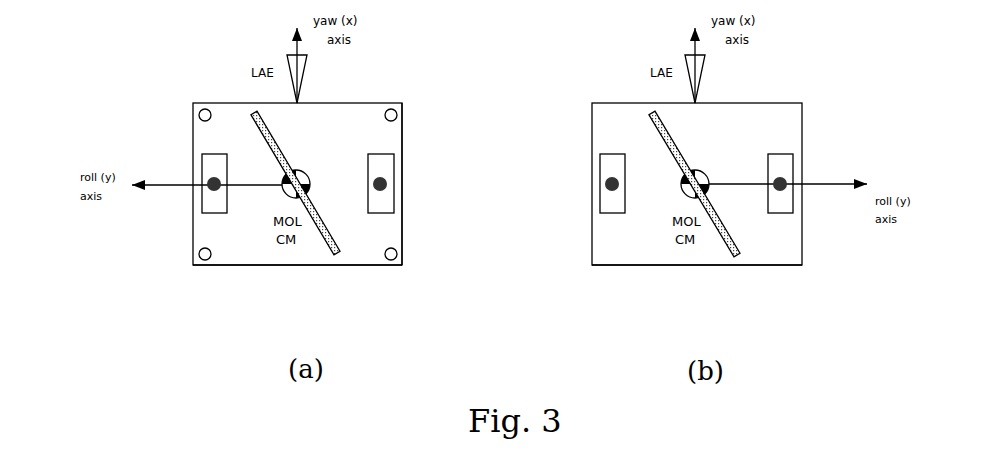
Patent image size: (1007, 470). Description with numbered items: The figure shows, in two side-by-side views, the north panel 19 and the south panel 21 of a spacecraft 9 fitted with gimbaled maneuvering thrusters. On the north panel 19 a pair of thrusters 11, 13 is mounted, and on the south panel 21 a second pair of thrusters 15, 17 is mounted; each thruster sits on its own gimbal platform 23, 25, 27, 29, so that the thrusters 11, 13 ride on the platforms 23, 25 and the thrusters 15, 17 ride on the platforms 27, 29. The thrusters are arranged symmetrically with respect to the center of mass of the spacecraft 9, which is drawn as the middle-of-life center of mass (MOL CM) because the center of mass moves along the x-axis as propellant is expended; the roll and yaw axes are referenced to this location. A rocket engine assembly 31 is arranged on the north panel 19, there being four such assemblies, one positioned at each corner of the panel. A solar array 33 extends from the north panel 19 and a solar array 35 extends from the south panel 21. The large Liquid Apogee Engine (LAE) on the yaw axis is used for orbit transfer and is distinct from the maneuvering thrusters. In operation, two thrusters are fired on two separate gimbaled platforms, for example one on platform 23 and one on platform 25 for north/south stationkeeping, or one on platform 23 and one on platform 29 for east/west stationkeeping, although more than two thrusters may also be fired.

In FIG. 3a, the spacecraft 9 is at (205, 297).
In FIG. 3b, the spacecraft 9 is at (805, 302).
In FIG. 3a, the thruster 11 is at (211, 182).
In FIG. 3a, the thruster 13 is at (383, 182).
In FIG. 3b, the thruster 15 is at (608, 185).
In FIG. 3b, the thruster 17 is at (783, 181).
In FIG. 3a, the north panel 19 is at (297, 204).
In FIG. 3b, the south panel 21 is at (697, 200).
In FIG. 3a, the gimbal platform 23 is at (185, 210).
In FIG. 3a, the gimbal platform 25 is at (410, 215).
In FIG. 3b, the gimbal platform 27 is at (585, 213).
In FIG. 3b, the gimbal platform 29 is at (808, 205).
In FIG. 3a, the rocket engine assembly 31 is at (412, 98).
In FIG. 3a, the solar array 33 is at (253, 113).
In FIG. 3b, the solar array 35 is at (652, 113).